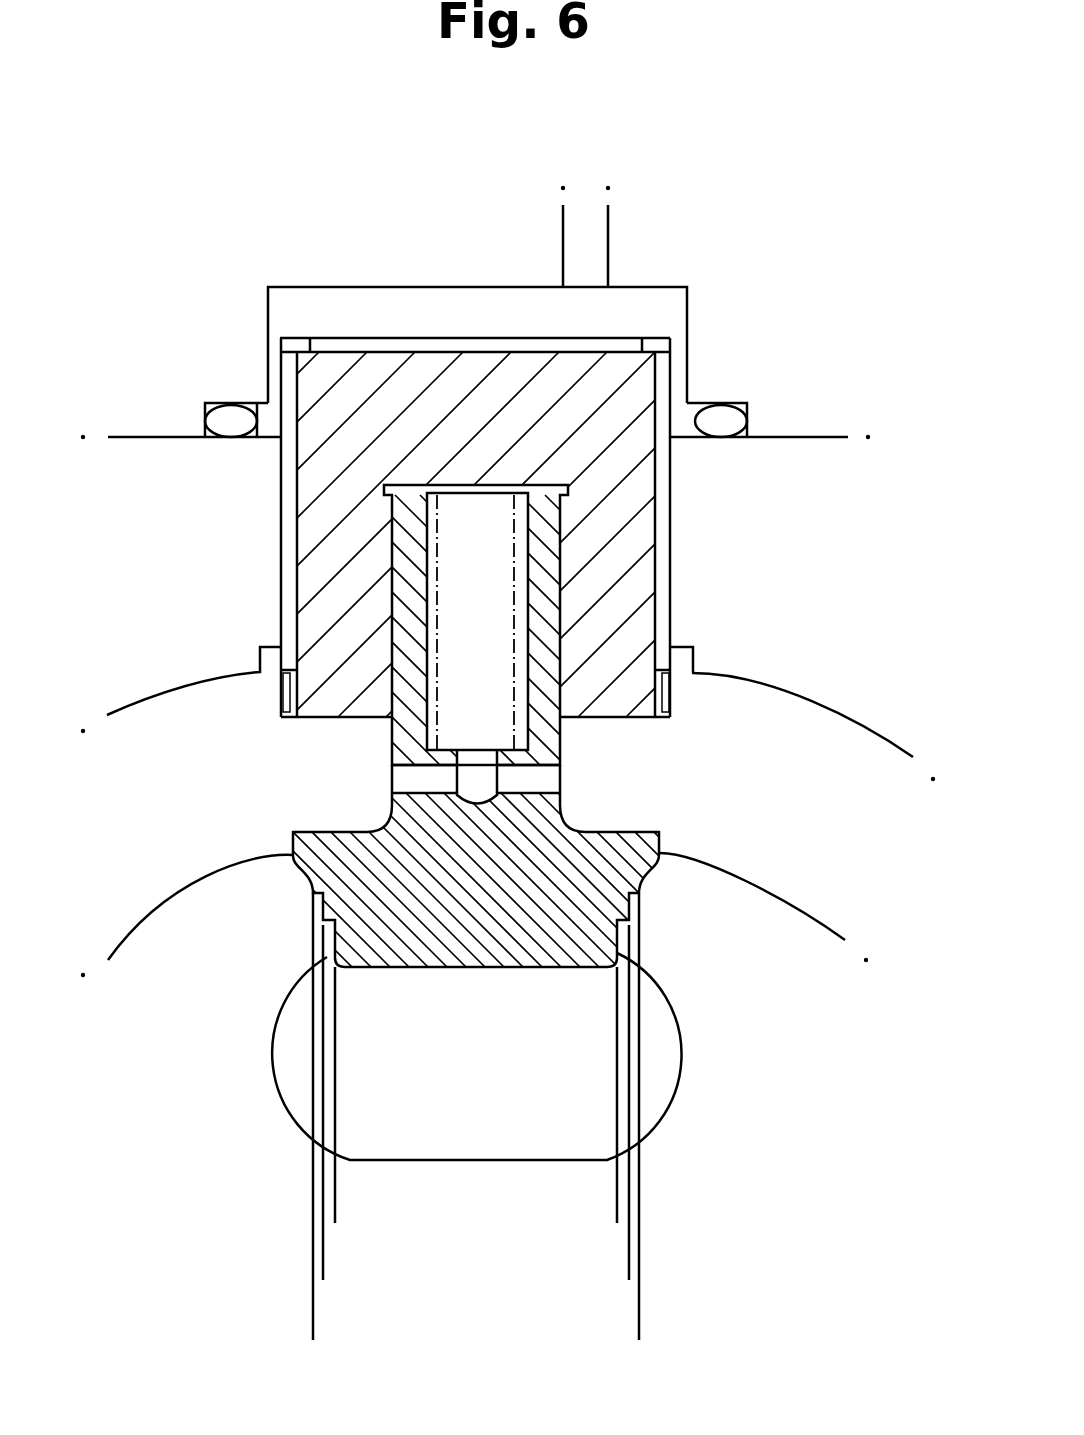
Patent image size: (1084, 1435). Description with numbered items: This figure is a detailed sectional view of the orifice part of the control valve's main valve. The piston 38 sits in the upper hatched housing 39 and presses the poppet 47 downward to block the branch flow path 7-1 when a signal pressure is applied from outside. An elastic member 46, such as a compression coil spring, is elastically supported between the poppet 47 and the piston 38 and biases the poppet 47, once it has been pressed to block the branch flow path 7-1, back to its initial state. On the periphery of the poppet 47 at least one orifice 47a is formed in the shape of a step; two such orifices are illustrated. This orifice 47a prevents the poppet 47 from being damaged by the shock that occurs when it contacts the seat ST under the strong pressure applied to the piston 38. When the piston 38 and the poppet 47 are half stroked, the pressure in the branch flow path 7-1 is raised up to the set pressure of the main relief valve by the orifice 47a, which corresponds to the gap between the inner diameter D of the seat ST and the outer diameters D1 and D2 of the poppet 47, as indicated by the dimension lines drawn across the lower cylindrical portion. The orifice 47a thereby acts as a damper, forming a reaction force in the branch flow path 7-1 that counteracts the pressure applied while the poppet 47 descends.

The piston 38 is at (635, 497).
The housing 39 is at (173, 712).
The elastic member 46 is at (440, 617).
The poppet 47 is at (592, 910).
The orifice 47a is at (630, 900).
The branch flow path 7-1 is at (678, 1062).
The seat ST is at (773, 930).
The inner diameter of the seat D is at (639, 1326).
The intermediate diameter D1 is at (629, 1268).
The second outer diameter of the poppet D2 is at (617, 1213).